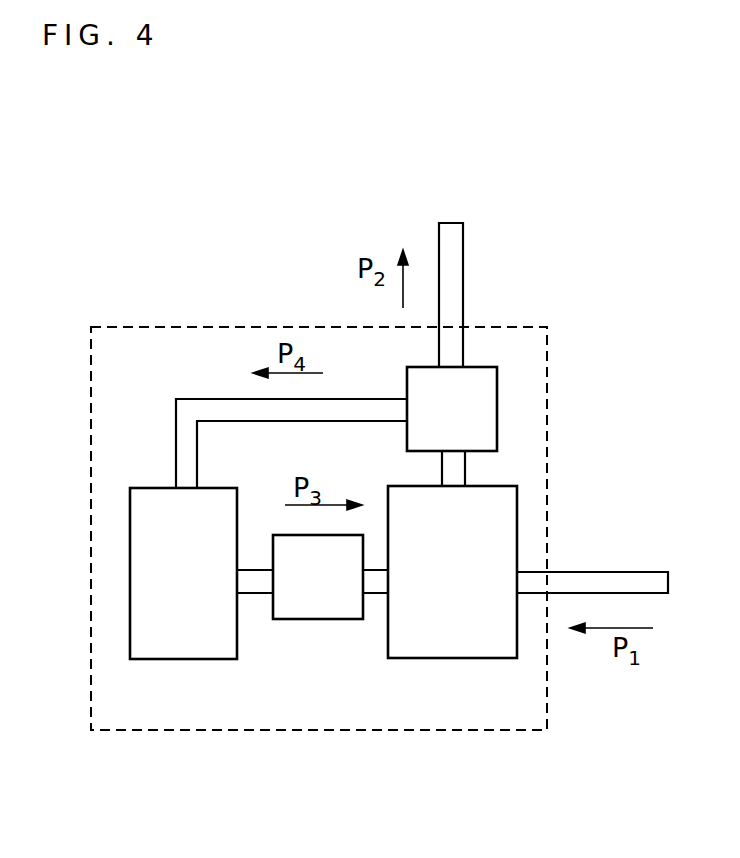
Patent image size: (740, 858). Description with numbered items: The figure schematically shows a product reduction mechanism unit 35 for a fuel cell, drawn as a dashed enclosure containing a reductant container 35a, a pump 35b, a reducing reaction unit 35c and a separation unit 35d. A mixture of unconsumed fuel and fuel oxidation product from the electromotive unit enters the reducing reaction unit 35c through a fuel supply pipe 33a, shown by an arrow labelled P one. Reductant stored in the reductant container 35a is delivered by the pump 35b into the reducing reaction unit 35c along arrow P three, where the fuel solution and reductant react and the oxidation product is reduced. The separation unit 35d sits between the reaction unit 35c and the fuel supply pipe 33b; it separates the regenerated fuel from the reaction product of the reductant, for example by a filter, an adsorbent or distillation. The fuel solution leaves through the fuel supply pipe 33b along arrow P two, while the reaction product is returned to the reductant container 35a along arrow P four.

The product reduction mechanism unit 35 is at (331, 731).
The reductant container 35a is at (183, 573).
The pump 35b is at (318, 577).
The reducing reaction unit 35c is at (452, 572).
The separation unit 35d is at (452, 409).
The fuel supply pipe 33a is at (612, 584).
The fuel supply pipe 33b is at (452, 283).